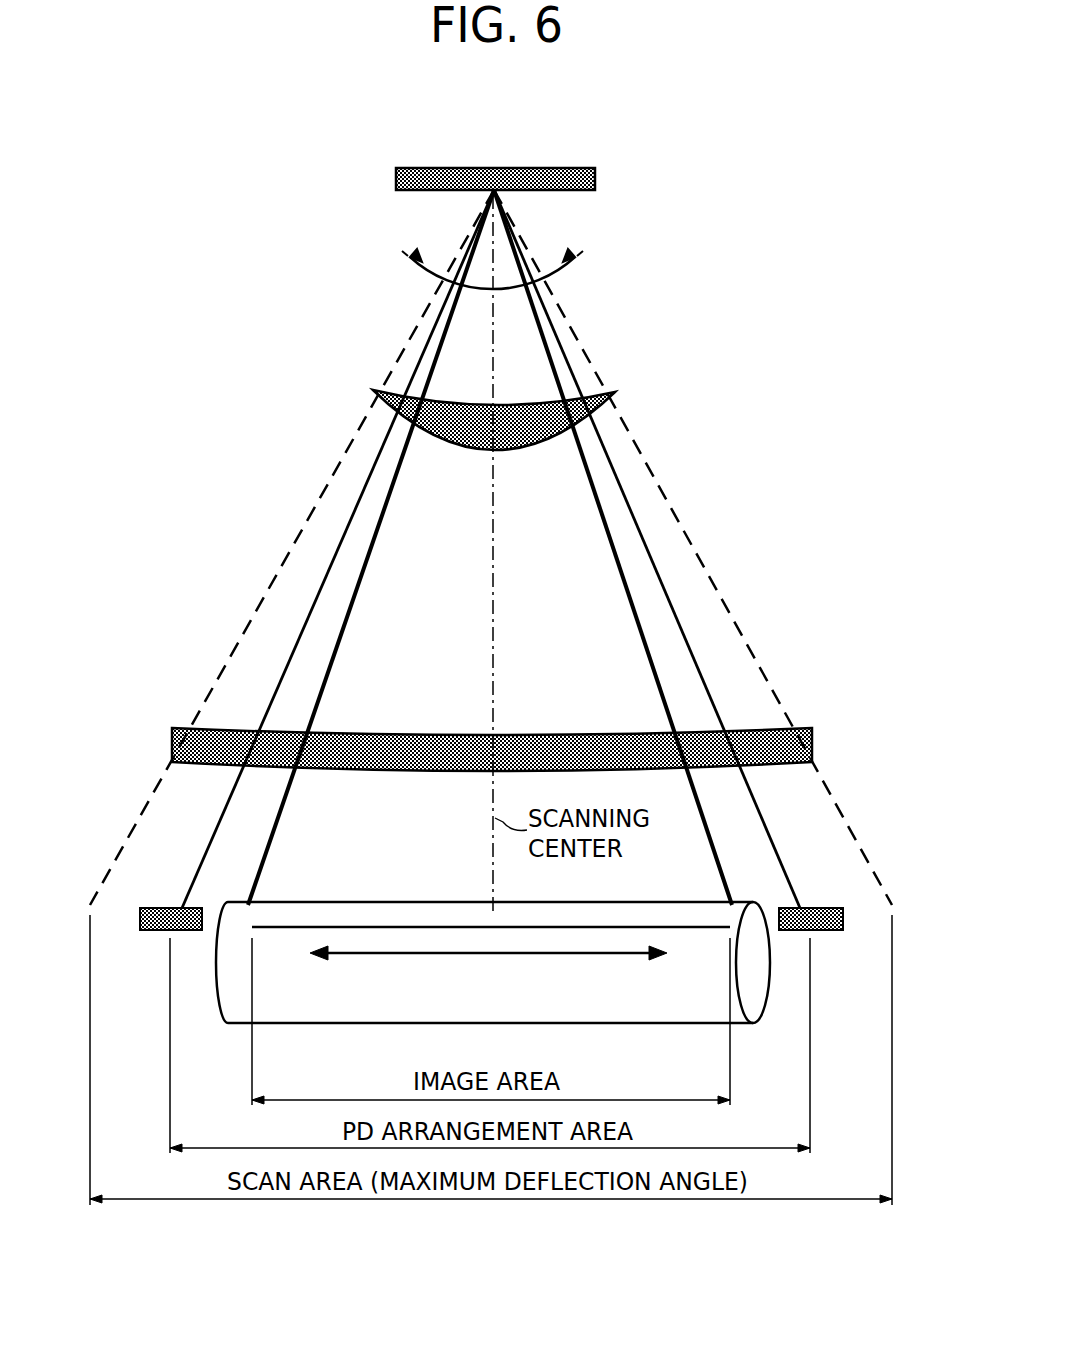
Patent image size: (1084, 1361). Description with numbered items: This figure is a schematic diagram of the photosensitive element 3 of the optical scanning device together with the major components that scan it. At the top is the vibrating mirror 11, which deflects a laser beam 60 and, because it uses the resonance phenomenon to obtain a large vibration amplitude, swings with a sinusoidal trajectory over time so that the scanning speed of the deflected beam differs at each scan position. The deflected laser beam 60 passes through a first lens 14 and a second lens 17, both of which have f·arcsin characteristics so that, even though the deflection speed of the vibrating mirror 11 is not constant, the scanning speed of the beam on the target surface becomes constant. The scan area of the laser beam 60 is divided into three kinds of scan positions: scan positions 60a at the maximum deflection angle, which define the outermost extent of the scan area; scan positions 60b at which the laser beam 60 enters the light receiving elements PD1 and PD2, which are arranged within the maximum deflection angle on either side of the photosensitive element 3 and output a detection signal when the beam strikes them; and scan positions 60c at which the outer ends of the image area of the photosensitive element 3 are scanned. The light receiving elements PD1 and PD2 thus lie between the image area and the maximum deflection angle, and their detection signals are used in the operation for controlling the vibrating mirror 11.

The vibrating mirror 11 is at (556, 176).
The first lens 14 is at (516, 440).
The second lens 17 is at (553, 750).
The photosensitive element 3 is at (645, 1025).
The laser beam 60 is at (491, 549).
The scan positions at the maximum deflection angle 60a is at (688, 535).
The scan positions at which the laser beam enters the light receiving elements 60b is at (667, 590).
The scan positions at which outer ends of the image area are scanned 60c is at (652, 662).
The light receiving element PD1 is at (832, 931).
The light receiving element PD2 is at (152, 931).